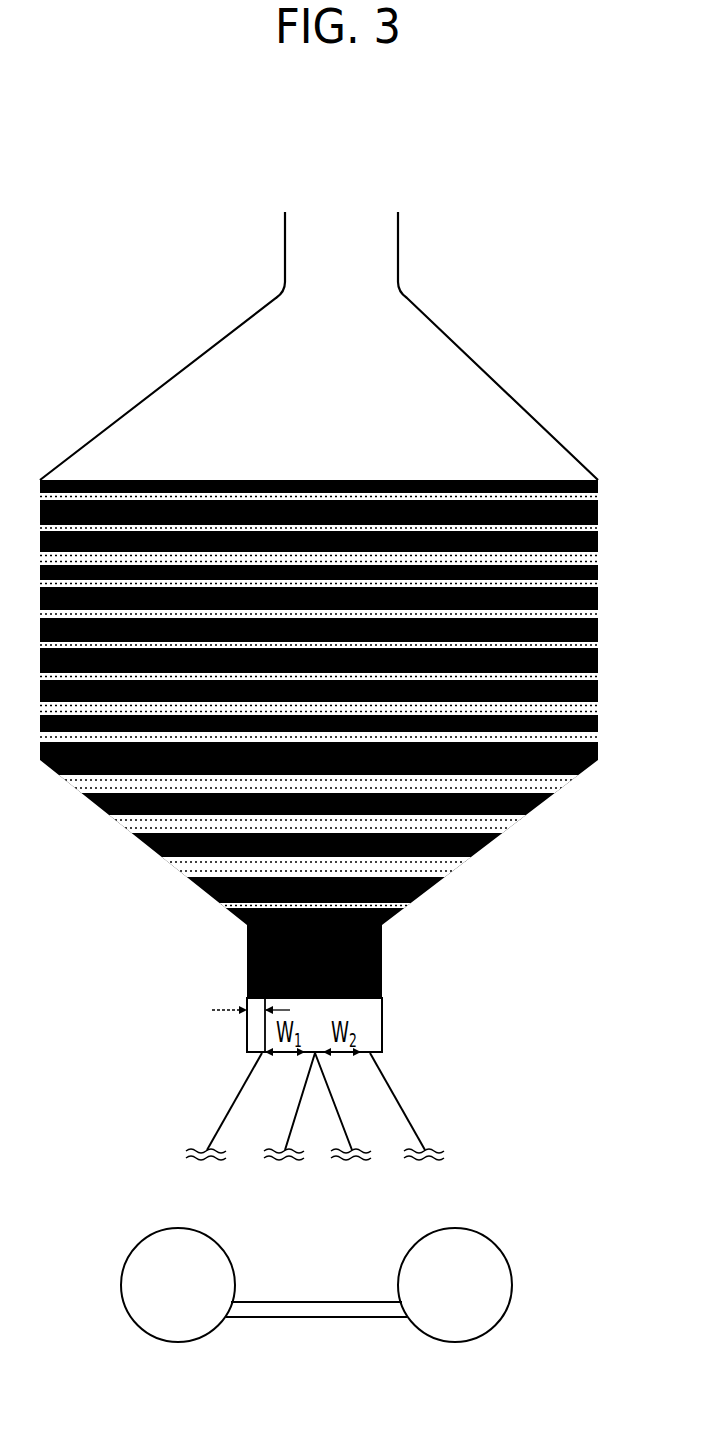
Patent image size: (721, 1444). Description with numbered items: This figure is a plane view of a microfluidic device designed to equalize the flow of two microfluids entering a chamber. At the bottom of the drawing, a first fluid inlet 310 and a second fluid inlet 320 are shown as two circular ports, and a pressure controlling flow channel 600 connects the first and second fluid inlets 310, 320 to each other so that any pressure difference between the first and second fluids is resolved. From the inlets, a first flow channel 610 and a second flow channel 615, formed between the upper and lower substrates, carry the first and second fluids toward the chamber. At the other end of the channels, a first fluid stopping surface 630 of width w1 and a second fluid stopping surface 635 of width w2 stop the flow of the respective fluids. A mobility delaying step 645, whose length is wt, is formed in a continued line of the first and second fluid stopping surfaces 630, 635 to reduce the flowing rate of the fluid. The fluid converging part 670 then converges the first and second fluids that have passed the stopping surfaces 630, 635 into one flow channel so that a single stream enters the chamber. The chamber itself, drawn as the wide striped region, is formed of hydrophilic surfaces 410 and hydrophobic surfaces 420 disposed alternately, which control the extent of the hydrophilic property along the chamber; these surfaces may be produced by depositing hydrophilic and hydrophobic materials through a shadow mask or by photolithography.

The hydrophobic surfaces 420 is at (490, 820).
The hydrophilic surfaces 410 is at (490, 840).
The fluid converging part 670 is at (382, 1000).
The mobility delaying step 645 is at (253, 1022).
The first fluid stopping surface 630 is at (272, 1062).
The second fluid stopping surface 635 is at (362, 1062).
The first flow channel 610 is at (233, 1105).
The second flow channel 615 is at (402, 1107).
The first fluid inlet 310 is at (121, 1285).
The second fluid inlet 320 is at (512, 1285).
The pressure controlling flow channel 600 is at (313, 1319).